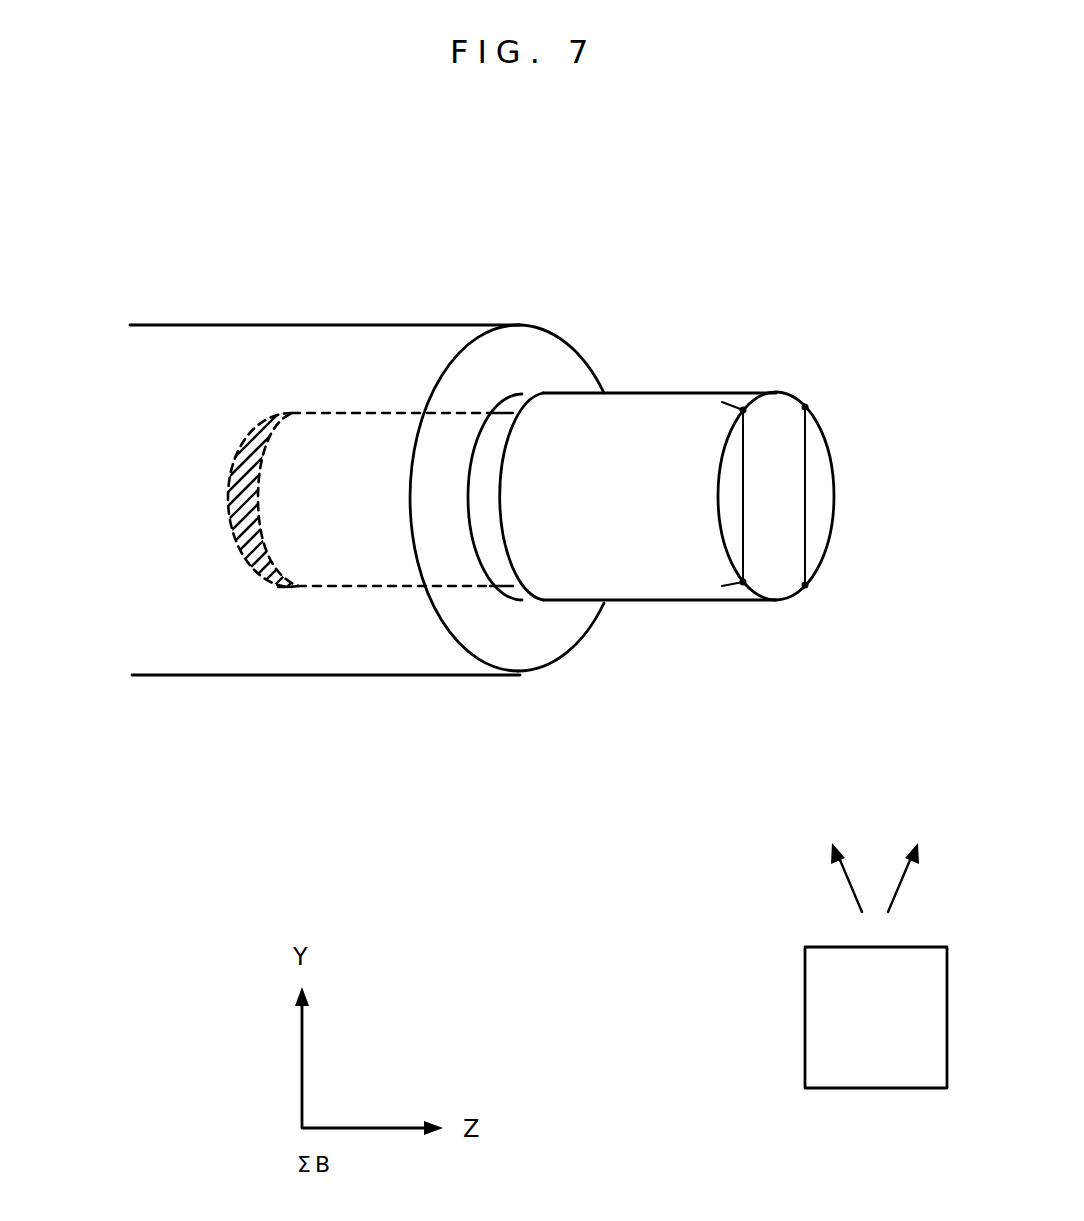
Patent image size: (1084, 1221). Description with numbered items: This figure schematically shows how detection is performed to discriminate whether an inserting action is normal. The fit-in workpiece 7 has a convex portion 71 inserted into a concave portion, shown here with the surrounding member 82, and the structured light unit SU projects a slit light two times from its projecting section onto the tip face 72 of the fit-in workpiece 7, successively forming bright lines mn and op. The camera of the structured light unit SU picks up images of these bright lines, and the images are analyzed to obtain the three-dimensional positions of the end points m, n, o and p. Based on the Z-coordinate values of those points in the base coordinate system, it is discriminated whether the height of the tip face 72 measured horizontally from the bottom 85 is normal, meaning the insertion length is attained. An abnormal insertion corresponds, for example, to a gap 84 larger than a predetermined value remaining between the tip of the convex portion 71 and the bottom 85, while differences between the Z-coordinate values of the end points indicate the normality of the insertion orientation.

The housing 82 is at (311, 289).
The fit-in workpiece 7 is at (652, 335).
The tip face 72 is at (772, 438).
The bottom 85 is at (232, 513).
The gap 84 is at (243, 562).
The convex portion 71 is at (370, 562).
The structured light unit SU is at (868, 1088).